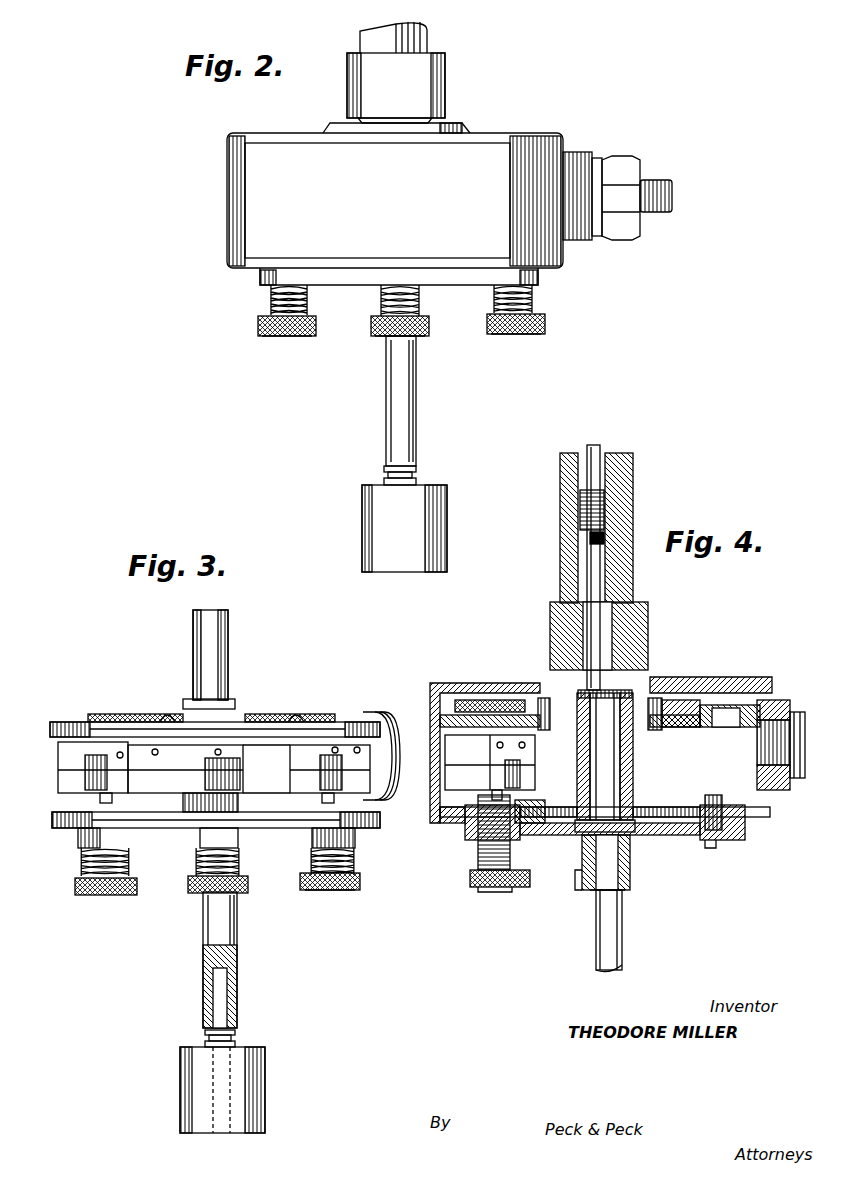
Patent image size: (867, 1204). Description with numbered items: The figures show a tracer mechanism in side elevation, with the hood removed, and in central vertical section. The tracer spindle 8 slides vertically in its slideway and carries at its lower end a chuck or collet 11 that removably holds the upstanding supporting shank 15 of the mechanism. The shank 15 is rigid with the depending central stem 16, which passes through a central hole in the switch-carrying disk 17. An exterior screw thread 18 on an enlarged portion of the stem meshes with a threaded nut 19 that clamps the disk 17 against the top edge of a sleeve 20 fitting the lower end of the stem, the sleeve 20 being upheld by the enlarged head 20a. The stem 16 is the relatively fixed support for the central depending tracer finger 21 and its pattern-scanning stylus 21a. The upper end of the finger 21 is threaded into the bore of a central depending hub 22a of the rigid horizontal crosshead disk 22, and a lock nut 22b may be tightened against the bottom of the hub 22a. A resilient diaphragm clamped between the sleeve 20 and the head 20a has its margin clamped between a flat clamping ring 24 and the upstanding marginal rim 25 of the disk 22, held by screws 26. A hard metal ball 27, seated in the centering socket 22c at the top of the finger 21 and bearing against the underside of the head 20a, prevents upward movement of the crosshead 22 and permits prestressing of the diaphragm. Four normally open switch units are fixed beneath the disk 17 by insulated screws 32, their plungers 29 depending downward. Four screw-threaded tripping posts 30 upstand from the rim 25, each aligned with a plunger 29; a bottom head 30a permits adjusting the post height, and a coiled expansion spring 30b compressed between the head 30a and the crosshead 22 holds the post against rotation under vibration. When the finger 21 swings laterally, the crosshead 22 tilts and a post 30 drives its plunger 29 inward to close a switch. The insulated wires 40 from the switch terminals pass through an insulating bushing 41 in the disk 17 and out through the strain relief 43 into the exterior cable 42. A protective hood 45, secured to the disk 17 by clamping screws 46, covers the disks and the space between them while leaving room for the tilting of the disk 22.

In FIG. 4, the tracer spindle 8 is at (633, 462).
In FIG. 2, the chuck or collet 11 is at (445, 97).
In FIG. 4, the chuck or collet 11 is at (648, 618).
In FIG. 3, the supporting shank 15 is at (229, 668).
In FIG. 4, the supporting shank 15 is at (600, 640).
In FIG. 4, the stem or spindle 16 is at (605, 756).
In FIG. 3, the switch-carrying disk 17 is at (55, 726).
In FIG. 4, the switch-carrying disk 17 is at (743, 705).
In FIG. 4, the screw thread 18 is at (605, 679).
In FIG. 4, the threaded nut 19 is at (680, 700).
In FIG. 3, the sleeve 20 is at (270, 793).
In FIG. 4, the sleeve 20 is at (635, 758).
In FIG. 4, the head 20a is at (648, 835).
In FIG. 2, the tracer finger 21 is at (416, 438).
In FIG. 3, the tracer finger 21 is at (238, 965).
In FIG. 4, the tracer finger 21 is at (622, 917).
In FIG. 2, the pattern-scanning stylus 21a is at (432, 534).
In FIG. 3, the pattern-scanning stylus 21a is at (245, 1083).
In FIG. 2, the crosshead disk 22 is at (540, 281).
In FIG. 3, the crosshead disk 22 is at (78, 840).
In FIG. 4, the crosshead disk 22 is at (745, 835).
In FIG. 4, the hub 22a is at (590, 874).
In FIG. 4, the lock nut 22b is at (594, 892).
In FIG. 4, the centering and retaining socket 22c is at (582, 848).
In FIG. 4, the clamping ring 24 is at (522, 805).
In FIG. 3, the marginal rim 25 is at (380, 820).
In FIG. 4, the marginal rim 25 is at (460, 818).
In FIG. 4, the screws 26 is at (712, 848).
In FIG. 4, the hard metal ball 27 is at (600, 828).
In FIG. 3, the switch plunger 29 is at (110, 800).
In FIG. 4, the switch plunger 29 is at (490, 792).
In FIG. 2, the switch tripping abutment post 30 is at (398, 285).
In FIG. 3, the switch tripping abutment post 30 is at (105, 805).
In FIG. 4, the switch tripping abutment post 30 is at (478, 850).
In FIG. 2, the bottom head 30a is at (385, 337).
In FIG. 3, the bottom head 30a is at (335, 893).
In FIG. 4, the bottom head 30a is at (495, 888).
In FIG. 2, the coiled expansion spring 30b is at (260, 319).
In FIG. 3, the coiled expansion spring 30b is at (352, 868).
In FIG. 4, the coiled expansion spring 30b is at (472, 880).
In FIG. 4, the screws 32 is at (478, 705).
In FIG. 3, the insulated wires 40 is at (168, 712).
In FIG. 4, the insulating bushing 41 is at (712, 712).
In FIG. 2, the exterior electric cable 42 is at (656, 214).
In FIG. 4, the exterior electric cable 42 is at (797, 712).
In FIG. 2, the strain relief 43 is at (582, 163).
In FIG. 3, the strain relief 43 is at (385, 712).
In FIG. 4, the strain relief 43 is at (792, 790).
In FIG. 2, the protective hood 45 is at (395, 195).
In FIG. 4, the protective hood 45 is at (430, 705).
In FIG. 4, the clamping bolts or screws 46 is at (658, 698).